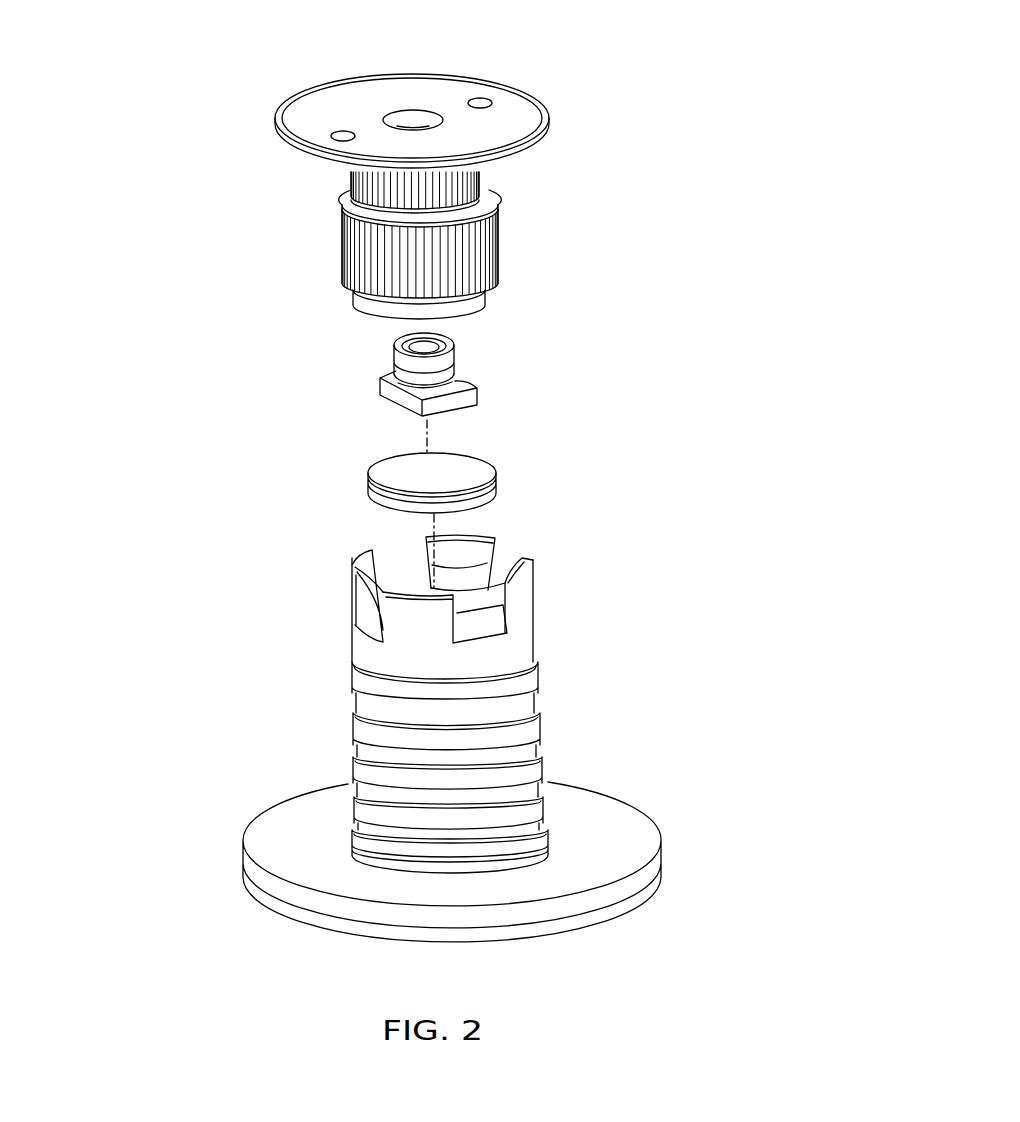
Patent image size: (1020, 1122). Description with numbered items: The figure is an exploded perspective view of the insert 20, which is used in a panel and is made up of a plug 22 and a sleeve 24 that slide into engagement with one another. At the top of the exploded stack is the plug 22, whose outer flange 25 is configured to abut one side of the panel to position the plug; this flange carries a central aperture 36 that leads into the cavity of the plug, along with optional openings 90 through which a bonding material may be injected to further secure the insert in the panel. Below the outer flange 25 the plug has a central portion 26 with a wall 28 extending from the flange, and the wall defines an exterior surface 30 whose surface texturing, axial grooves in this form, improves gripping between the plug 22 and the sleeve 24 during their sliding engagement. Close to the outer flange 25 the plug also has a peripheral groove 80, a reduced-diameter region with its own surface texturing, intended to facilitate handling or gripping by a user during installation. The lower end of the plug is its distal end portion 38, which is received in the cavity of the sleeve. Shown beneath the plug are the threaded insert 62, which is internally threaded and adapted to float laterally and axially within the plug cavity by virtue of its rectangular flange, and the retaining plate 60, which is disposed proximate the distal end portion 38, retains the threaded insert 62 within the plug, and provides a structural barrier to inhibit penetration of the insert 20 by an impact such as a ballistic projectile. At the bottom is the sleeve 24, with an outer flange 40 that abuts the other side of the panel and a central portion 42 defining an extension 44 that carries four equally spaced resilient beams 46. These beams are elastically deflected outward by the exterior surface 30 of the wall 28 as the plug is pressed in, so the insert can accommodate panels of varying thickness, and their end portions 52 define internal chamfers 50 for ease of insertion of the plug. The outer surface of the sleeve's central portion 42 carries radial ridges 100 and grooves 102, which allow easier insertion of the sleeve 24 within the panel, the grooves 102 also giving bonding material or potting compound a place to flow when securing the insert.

The insert 20 is at (200, 475).
The plug 22 is at (272, 124).
The sleeve 24 is at (270, 684).
The outer flange 25 is at (527, 123).
The central portion 26 is at (514, 237).
The wall 28 is at (488, 209).
The exterior surface 30 is at (372, 262).
The aperture 36 is at (415, 116).
The distal end portion 38 is at (510, 293).
The outer flange 40 is at (610, 836).
The central portion 42 is at (549, 682).
The extension 44 is at (517, 645).
The resilient beams 46 is at (465, 566).
The internal chamfers 50 is at (368, 565).
The end portions 52 is at (340, 595).
The retaining plate 60 is at (412, 470).
The threaded insert 62 is at (403, 360).
The peripheral groove 80 is at (360, 187).
The openings 90 is at (484, 98).
The radial ridges 100 is at (368, 745).
The grooves 102 is at (530, 752).